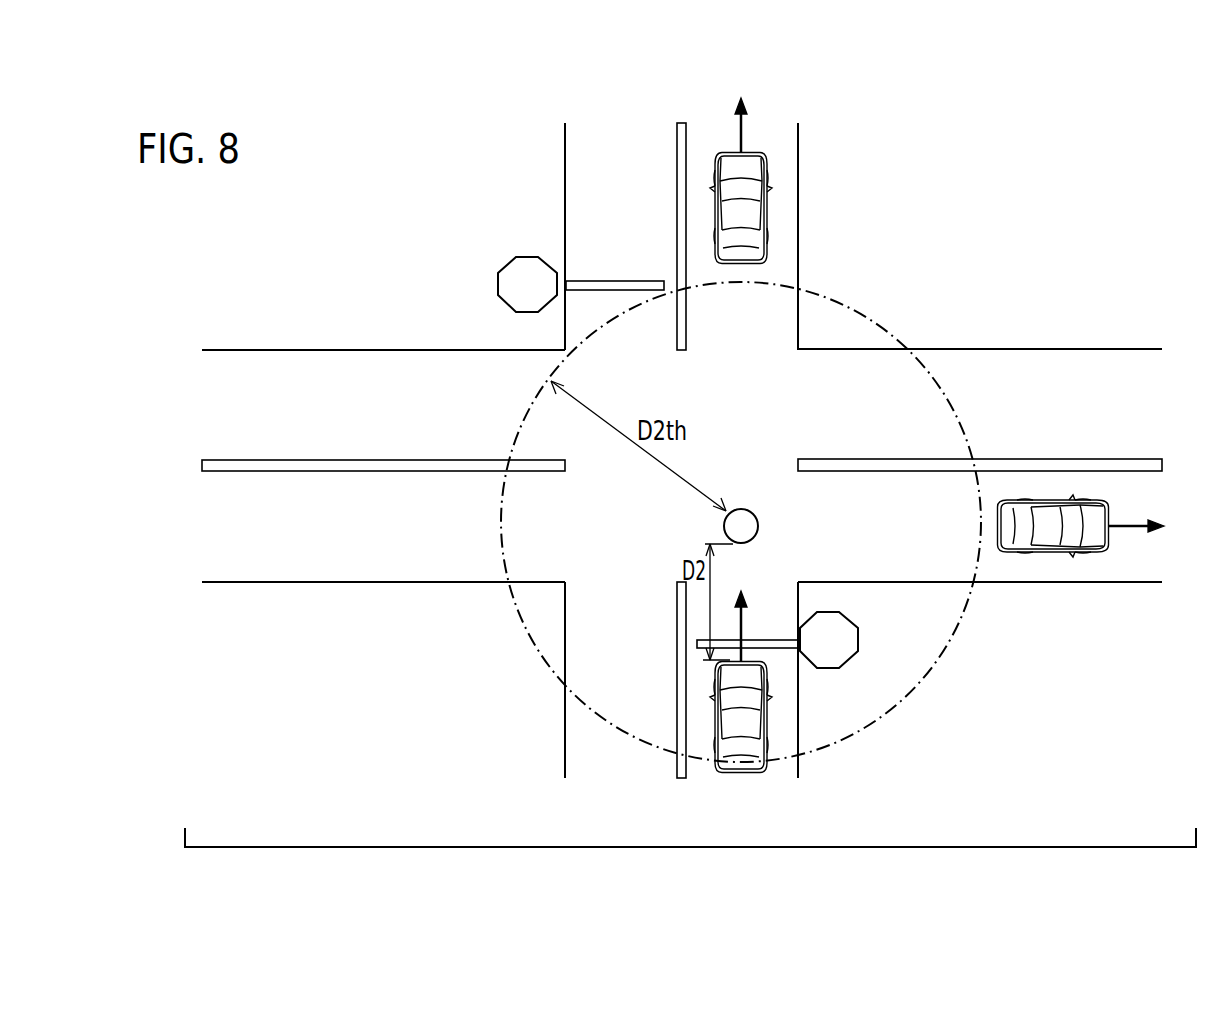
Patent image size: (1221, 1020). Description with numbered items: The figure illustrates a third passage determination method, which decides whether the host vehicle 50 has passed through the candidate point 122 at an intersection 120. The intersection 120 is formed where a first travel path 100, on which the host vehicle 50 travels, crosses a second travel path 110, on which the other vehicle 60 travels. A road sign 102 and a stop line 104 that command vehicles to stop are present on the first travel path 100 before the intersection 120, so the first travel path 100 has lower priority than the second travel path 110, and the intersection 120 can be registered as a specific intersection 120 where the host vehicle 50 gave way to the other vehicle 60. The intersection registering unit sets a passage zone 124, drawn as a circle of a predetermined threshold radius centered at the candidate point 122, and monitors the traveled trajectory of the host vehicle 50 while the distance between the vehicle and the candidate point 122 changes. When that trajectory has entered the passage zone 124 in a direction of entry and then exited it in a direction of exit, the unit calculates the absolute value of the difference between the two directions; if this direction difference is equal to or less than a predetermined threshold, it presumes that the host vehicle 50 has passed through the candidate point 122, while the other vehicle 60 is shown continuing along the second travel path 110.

The host vehicle 50 is at (765, 218).
The other vehicle 60 is at (1042, 550).
The first travel path 100 is at (798, 167).
The road sign 102 is at (498, 284).
The stop line 104 is at (587, 280).
The second travel path 110 is at (310, 350).
The intersection 120 is at (820, 330).
The candidate point 122 is at (758, 525).
The passage zone 124 is at (908, 698).